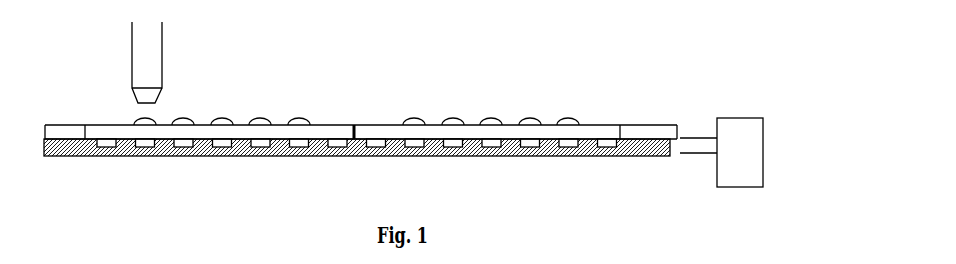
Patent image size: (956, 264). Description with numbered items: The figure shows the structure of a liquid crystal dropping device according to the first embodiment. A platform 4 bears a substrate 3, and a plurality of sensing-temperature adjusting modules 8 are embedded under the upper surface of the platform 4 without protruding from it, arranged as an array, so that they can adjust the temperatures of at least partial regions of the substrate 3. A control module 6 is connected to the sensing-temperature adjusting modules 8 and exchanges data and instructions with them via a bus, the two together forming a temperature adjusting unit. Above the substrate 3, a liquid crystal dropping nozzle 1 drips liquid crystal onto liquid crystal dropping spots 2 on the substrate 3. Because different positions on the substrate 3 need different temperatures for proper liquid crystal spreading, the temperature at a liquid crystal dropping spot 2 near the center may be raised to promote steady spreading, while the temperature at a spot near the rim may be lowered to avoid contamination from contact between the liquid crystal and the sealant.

The liquid crystal dropping nozzle 1 is at (148, 77).
The liquid crystal dropping spot 2 is at (257, 120).
The substrate 3 is at (610, 124).
The platform 4 is at (615, 157).
The control module 6 is at (743, 178).
The sensing-temperature adjusting module 8 is at (143, 143).